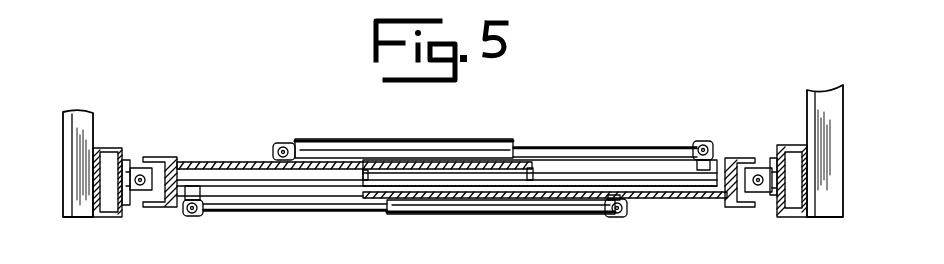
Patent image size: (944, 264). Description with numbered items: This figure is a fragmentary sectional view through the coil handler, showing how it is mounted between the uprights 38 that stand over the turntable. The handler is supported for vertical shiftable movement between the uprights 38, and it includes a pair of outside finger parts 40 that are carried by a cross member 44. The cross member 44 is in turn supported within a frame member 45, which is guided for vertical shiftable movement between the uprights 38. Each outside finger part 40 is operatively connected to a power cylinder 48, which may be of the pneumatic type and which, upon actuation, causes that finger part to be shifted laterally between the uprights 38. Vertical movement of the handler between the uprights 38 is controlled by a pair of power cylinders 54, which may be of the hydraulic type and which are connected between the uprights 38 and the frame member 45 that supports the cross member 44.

The uprights 38 is at (102, 147).
The outside finger parts 40 is at (192, 187).
The cross member 44 is at (215, 160).
The frame member 45 is at (155, 155).
The power cylinder 48 is at (488, 142).
The power cylinders 54 is at (142, 190).